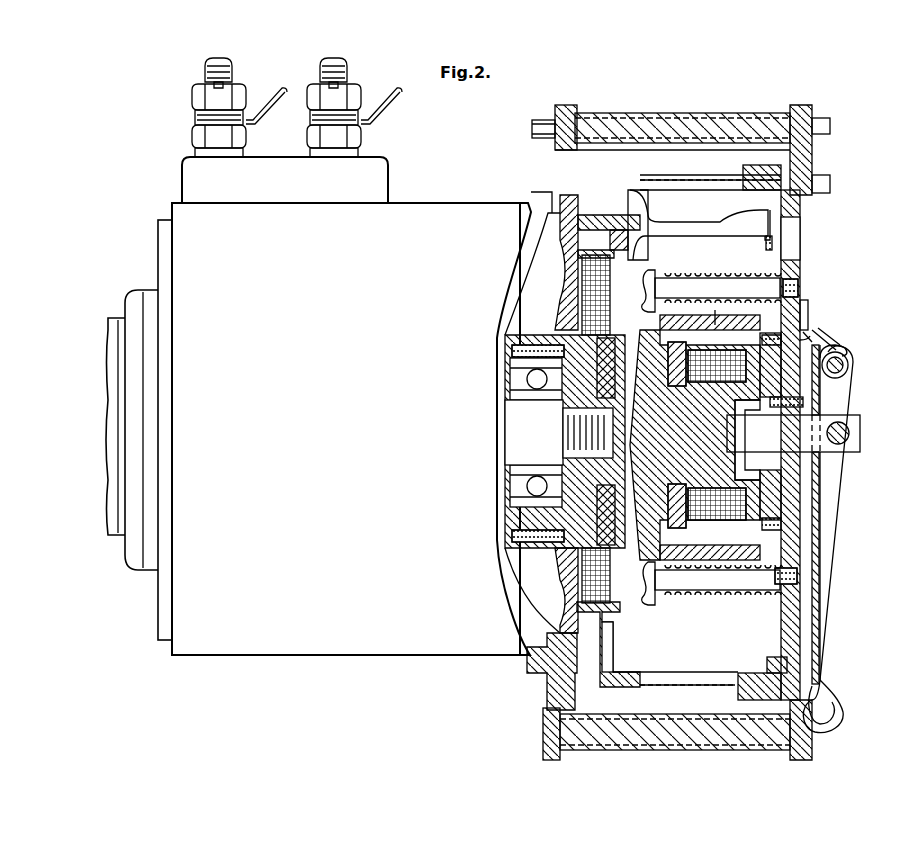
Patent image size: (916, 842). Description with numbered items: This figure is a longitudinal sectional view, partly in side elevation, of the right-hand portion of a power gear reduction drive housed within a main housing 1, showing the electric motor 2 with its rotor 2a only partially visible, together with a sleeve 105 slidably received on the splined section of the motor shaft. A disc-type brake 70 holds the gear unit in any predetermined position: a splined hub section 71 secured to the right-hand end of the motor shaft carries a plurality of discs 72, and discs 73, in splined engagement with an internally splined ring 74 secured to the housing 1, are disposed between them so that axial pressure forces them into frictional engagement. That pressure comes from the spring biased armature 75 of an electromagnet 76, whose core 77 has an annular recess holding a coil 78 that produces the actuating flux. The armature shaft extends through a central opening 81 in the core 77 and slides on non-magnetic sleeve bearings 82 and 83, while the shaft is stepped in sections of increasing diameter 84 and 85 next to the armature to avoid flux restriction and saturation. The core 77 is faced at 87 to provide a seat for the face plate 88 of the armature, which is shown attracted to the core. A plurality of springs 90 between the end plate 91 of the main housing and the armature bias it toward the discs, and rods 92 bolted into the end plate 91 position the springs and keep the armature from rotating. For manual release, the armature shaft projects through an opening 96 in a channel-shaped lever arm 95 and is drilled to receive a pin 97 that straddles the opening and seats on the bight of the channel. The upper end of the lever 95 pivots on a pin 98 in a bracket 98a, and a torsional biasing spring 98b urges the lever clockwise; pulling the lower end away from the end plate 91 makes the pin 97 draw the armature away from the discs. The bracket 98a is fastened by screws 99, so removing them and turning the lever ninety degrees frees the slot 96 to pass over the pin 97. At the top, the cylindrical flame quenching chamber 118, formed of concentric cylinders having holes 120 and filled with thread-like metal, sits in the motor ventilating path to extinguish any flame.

The main housing 1 is at (440, 203).
The electric motor 2 is at (160, 242).
The rotor 2a is at (138, 298).
The sleeve 105 is at (108, 350).
The brake 70 is at (735, 257).
The hub section 71 is at (590, 364).
The discs 72 is at (573, 434).
The discs 73 is at (582, 278).
The internally splined ring 74 is at (628, 240).
The armature 75 is at (632, 488).
The electromagnet 76 is at (830, 306).
The core 77 is at (740, 310).
The coil 78 is at (724, 311).
The central opening 81 is at (736, 405).
The non-magnetic sleeve bearing 82 is at (676, 392).
The non-magnetic sleeve bearing 83 is at (766, 405).
The enlarged diameter shaft section 84 is at (708, 408).
The enlarged diameter shaft section 85 is at (682, 410).
The faced seating surface 87 is at (670, 310).
The face plate 88 is at (660, 545).
The springs 90 is at (688, 278).
The end plate 91 is at (802, 206).
The rods 92 is at (646, 278).
The lever arm 95 is at (826, 503).
The opening 96 is at (820, 482).
The pin 97 is at (856, 434).
The pin 98 is at (848, 366).
The bracket 98a is at (822, 336).
The torsional biasing spring 98b is at (845, 352).
The screws 99 is at (812, 330).
The flame quenching chamber 118 is at (735, 118).
The holes 120 is at (645, 113).